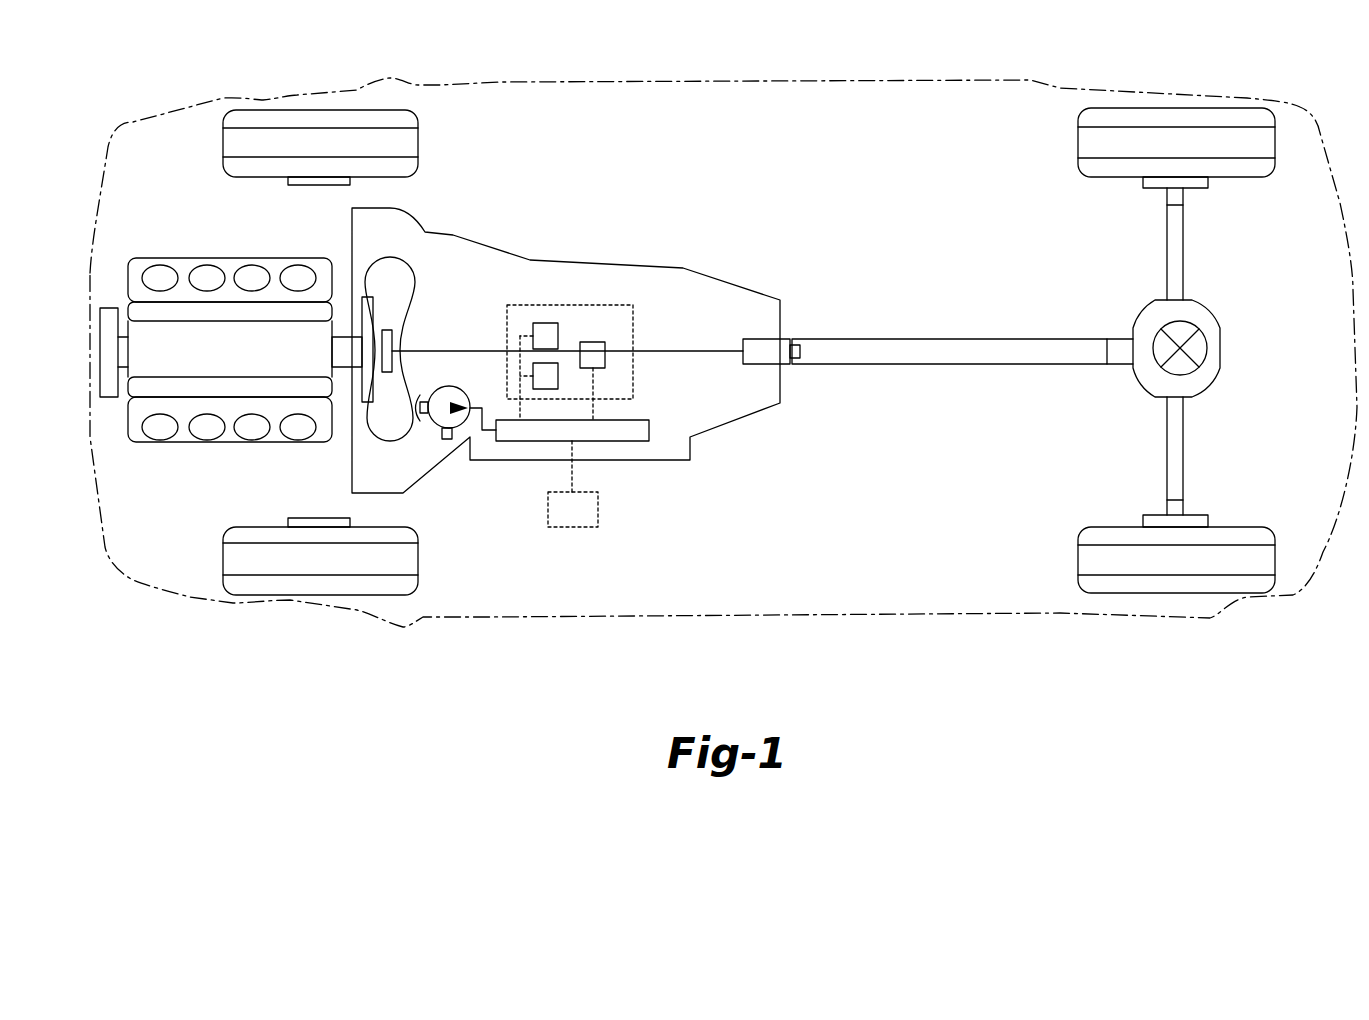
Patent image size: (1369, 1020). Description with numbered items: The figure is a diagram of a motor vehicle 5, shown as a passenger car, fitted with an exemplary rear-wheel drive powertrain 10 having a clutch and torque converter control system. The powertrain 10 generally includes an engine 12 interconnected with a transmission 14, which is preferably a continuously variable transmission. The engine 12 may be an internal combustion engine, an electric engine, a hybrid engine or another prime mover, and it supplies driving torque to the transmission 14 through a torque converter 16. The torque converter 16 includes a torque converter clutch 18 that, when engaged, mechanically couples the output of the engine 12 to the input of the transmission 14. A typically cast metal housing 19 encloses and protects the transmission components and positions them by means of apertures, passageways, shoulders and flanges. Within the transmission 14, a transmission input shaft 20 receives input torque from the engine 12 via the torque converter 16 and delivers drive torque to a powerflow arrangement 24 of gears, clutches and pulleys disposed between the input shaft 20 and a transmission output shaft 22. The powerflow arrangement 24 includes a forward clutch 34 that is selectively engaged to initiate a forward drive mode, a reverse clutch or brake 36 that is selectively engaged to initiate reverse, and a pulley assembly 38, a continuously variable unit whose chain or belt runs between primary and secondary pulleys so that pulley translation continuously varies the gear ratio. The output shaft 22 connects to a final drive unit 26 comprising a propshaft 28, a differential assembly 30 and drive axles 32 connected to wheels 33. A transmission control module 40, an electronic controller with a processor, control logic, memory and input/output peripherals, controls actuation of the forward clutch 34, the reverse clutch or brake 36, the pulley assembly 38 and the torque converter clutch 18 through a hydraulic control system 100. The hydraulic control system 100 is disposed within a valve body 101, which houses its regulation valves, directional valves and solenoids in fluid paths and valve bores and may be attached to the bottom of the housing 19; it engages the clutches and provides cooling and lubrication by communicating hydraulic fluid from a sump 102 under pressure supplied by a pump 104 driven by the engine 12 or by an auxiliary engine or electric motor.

The motor vehicle 5 is at (722, 82).
The powertrain 10 is at (754, 163).
The engine 12 is at (158, 363).
The transmission 14 is at (576, 392).
The torque converter 16 is at (400, 258).
The torque converter clutch 18 is at (383, 374).
The housing 19 is at (743, 287).
The transmission input shaft 20 is at (433, 351).
The transmission output shaft 22 is at (685, 364).
The powerflow arrangement 24 is at (579, 343).
The final drive unit 26 is at (1039, 351).
The propshaft 28 is at (943, 339).
The differential assembly 30 is at (1220, 355).
The drive axles 32 is at (1183, 258).
The wheels 33 is at (1243, 178).
The forward clutch 34 is at (545, 323).
The reverse clutch or brake 36 is at (558, 376).
The pulley assembly 38 is at (597, 342).
The transmission control module 40 is at (573, 527).
The hydraulic control system 100 is at (638, 441).
The valve body 101 is at (490, 417).
The sump 102 is at (442, 438).
The pump 104 is at (449, 386).